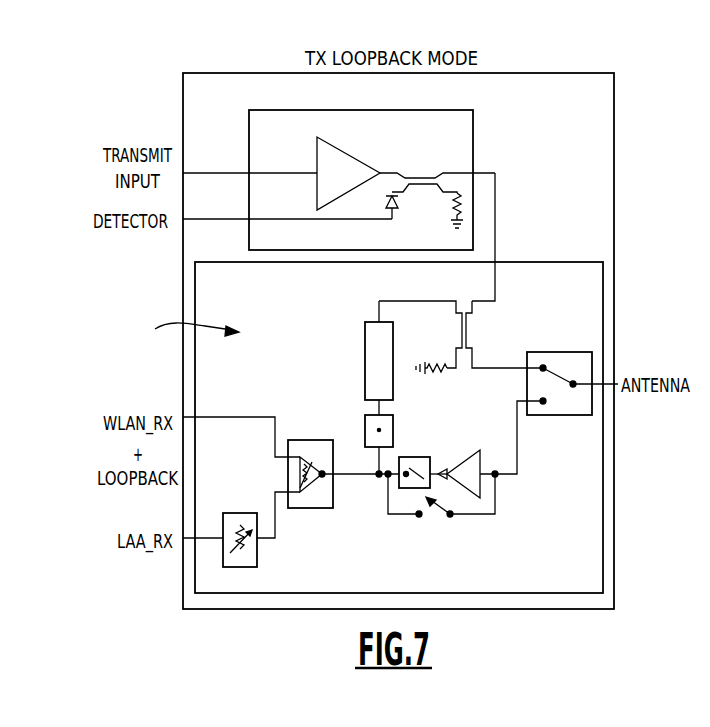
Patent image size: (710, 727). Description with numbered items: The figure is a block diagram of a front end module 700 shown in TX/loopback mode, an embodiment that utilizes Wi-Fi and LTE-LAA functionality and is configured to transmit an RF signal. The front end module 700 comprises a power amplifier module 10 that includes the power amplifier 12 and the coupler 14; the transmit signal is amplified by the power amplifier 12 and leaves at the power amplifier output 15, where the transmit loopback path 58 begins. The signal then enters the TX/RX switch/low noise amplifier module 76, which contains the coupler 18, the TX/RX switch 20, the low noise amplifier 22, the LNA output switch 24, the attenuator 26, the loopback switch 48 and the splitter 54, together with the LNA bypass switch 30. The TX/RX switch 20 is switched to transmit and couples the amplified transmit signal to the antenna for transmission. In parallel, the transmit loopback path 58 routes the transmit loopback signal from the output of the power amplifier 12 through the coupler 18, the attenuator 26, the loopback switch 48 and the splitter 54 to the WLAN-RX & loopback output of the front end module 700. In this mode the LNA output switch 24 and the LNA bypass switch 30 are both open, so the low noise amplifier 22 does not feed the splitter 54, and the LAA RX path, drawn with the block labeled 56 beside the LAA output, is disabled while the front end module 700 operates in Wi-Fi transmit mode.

The front end module 700 is at (197, 73).
The power amplifier module 10 is at (474, 133).
The power amplifier 12 is at (317, 160).
The coupler 14 is at (422, 185).
The power amplifier output 15 is at (497, 204).
The TX/RX switch/low noise amplifier module 76 is at (540, 260).
The transmit loopback path 58 is at (183, 328).
The coupler 18 is at (467, 333).
The attenuator 26 is at (365, 358).
The loopback switch 48 is at (394, 430).
The splitter 54 is at (325, 440).
The LAA amplifier 56 is at (252, 513).
The LNA output switch 24 is at (412, 457).
The low noise amplifier 22 is at (474, 500).
The LNA bypass switch 30 is at (414, 520).
The TX/RX switch 20 is at (560, 352).